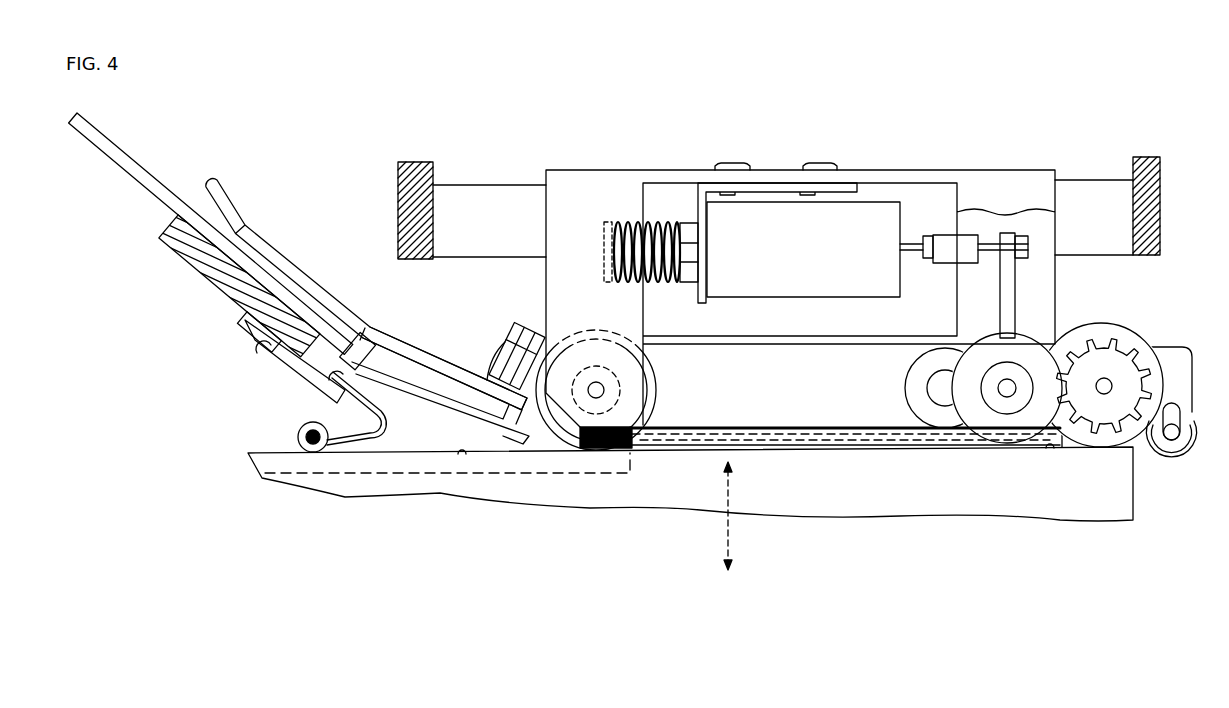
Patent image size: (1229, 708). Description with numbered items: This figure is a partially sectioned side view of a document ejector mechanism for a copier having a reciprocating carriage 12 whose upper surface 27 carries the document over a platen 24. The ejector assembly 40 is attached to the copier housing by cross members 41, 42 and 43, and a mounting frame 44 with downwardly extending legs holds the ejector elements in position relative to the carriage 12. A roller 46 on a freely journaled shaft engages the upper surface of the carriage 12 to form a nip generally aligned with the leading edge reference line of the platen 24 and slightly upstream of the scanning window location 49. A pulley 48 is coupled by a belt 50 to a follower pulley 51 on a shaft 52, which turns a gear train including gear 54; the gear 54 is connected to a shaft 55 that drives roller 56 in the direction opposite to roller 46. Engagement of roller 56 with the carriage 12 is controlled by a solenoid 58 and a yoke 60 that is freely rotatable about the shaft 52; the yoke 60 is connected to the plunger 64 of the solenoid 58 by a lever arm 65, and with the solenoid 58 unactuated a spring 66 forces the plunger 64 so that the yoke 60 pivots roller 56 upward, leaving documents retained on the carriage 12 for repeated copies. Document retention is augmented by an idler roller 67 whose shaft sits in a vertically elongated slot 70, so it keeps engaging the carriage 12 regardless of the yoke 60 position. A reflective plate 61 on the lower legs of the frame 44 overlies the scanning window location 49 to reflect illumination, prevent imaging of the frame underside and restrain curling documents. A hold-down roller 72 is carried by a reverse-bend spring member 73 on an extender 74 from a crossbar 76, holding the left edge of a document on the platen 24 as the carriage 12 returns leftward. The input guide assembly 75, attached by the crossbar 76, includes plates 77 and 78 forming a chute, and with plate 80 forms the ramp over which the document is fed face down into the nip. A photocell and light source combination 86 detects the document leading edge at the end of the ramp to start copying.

The reciprocating carriage 12 is at (580, 497).
The platen 24 is at (348, 465).
The surface 27 is at (1048, 465).
The assembly 40 is at (690, 157).
The cross member 41 is at (405, 188).
The cross member 42 is at (1147, 163).
The cross member 43 is at (495, 198).
The mounting frame 44 is at (931, 180).
The roller 46 is at (658, 367).
The pulley 48 is at (650, 392).
The scanning window location 49 is at (733, 538).
The belt 50 is at (795, 340).
The follower pulley 51 is at (965, 380).
The shaft 52 is at (1005, 390).
The gear 54 is at (1092, 352).
The shaft 55 is at (1112, 383).
The roller 56 is at (1113, 325).
The solenoid 58 is at (800, 215).
The yoke 60 is at (1176, 350).
The reflective plate 61 is at (775, 445).
The plunger 64 is at (945, 248).
The lever arm 65 is at (1005, 303).
The spring 66 is at (660, 272).
The idler roller 67 is at (1181, 455).
The slot 70 is at (1181, 407).
The roller 72 is at (300, 427).
The reverse-bend spring member 73 is at (385, 431).
The extender 74 is at (312, 371).
The input guide assembly 75 is at (316, 215).
The crossbar 76 is at (208, 268).
The plate 77 is at (440, 395).
The plate 78 is at (440, 361).
The plate 80 is at (137, 172).
The photocell and light source combination 86 is at (512, 355).